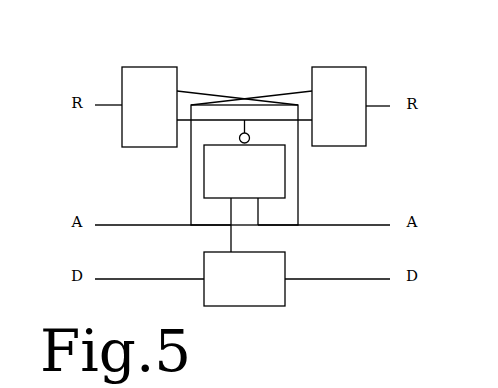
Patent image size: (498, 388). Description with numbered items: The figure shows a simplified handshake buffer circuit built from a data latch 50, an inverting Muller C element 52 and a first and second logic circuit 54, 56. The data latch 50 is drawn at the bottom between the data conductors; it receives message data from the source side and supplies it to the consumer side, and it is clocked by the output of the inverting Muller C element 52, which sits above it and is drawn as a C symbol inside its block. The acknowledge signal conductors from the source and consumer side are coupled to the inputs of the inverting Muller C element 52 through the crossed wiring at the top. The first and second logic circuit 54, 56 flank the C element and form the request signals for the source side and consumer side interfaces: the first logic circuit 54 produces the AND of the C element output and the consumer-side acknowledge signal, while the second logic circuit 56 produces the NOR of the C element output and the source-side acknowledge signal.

The data latch 50 is at (245, 306).
The inverting Muller C element 52 is at (298, 165).
The first logic circuit 54 is at (150, 67).
The second logic circuit 56 is at (340, 67).